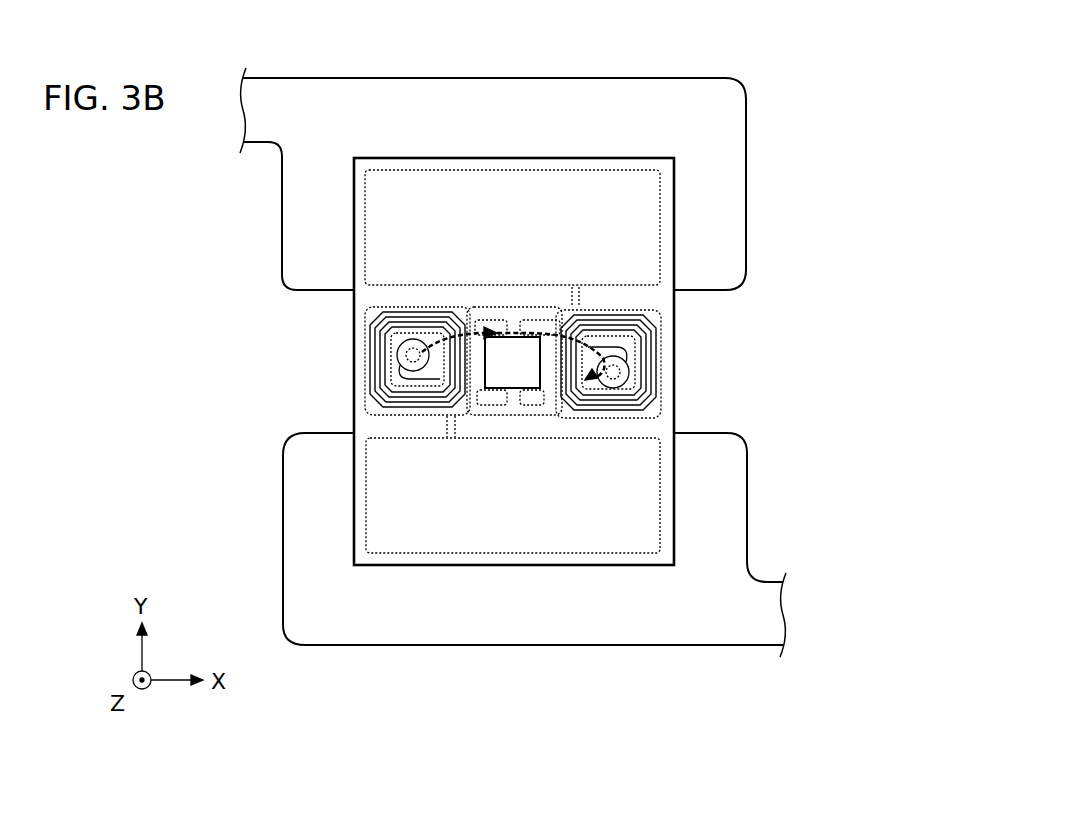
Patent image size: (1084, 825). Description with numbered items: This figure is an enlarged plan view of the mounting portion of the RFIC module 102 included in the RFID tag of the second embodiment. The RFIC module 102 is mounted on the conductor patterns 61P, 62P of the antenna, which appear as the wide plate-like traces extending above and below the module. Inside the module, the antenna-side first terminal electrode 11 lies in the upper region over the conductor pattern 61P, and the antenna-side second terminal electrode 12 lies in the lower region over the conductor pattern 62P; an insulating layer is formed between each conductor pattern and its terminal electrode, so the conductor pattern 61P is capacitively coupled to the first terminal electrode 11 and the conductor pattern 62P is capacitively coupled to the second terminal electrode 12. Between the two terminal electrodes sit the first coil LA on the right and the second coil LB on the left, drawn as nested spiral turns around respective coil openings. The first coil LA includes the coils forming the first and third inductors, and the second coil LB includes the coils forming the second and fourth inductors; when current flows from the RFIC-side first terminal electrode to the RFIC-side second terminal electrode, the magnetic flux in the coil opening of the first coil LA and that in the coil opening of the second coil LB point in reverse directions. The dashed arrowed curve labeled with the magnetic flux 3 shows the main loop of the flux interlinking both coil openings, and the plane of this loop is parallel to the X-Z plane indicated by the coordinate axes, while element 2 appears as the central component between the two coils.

The RFIC module 102 is at (695, 314).
The conductor pattern 61P is at (396, 102).
The conductor pattern 62P is at (594, 630).
The antenna-side first terminal electrode 11 is at (378, 232).
The antenna-side second terminal electrode 12 is at (648, 509).
The second coil LB is at (346, 343).
The first coil LA is at (680, 384).
The magnetic element 2 is at (512, 350).
The magnetic flux 3 is at (475, 318).